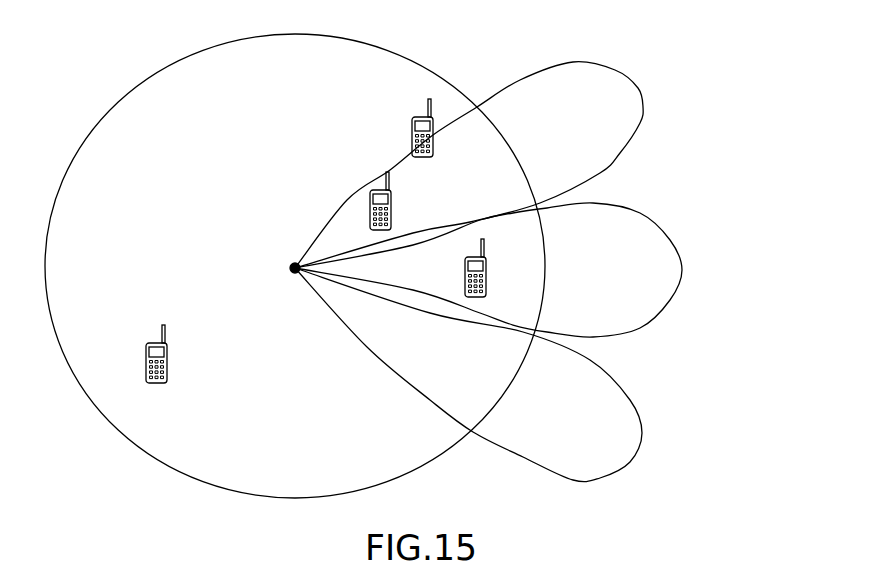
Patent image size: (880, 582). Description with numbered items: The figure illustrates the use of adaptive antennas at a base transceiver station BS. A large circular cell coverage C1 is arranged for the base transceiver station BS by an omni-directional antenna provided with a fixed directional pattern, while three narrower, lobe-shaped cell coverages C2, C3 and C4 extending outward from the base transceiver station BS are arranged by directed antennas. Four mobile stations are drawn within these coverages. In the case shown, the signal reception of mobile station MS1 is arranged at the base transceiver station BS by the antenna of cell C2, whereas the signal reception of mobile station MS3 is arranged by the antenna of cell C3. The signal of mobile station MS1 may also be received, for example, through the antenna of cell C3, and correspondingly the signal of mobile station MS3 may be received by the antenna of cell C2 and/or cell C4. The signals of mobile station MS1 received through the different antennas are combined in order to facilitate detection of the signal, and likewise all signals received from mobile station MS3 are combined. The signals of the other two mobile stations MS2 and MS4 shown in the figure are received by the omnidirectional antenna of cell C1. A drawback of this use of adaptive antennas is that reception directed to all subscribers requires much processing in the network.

The cell coverage C1 is at (198, 53).
The cell coverage C2 is at (608, 62).
The cell coverage C3 is at (675, 231).
The cell coverage C4 is at (638, 412).
The base transceiver station BS is at (276, 263).
The mobile station MS1 is at (392, 193).
The mobile station MS2 is at (167, 348).
The mobile station MS3 is at (487, 258).
The mobile station MS4 is at (434, 118).